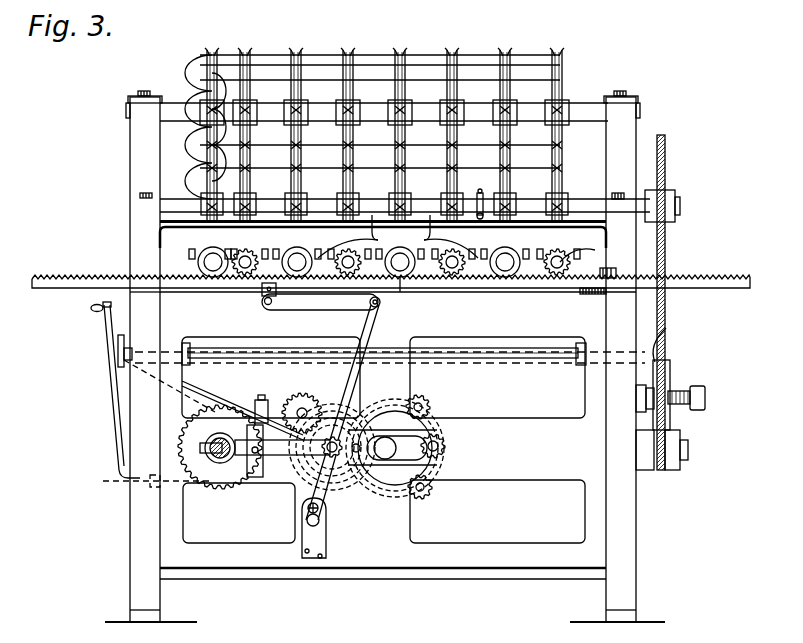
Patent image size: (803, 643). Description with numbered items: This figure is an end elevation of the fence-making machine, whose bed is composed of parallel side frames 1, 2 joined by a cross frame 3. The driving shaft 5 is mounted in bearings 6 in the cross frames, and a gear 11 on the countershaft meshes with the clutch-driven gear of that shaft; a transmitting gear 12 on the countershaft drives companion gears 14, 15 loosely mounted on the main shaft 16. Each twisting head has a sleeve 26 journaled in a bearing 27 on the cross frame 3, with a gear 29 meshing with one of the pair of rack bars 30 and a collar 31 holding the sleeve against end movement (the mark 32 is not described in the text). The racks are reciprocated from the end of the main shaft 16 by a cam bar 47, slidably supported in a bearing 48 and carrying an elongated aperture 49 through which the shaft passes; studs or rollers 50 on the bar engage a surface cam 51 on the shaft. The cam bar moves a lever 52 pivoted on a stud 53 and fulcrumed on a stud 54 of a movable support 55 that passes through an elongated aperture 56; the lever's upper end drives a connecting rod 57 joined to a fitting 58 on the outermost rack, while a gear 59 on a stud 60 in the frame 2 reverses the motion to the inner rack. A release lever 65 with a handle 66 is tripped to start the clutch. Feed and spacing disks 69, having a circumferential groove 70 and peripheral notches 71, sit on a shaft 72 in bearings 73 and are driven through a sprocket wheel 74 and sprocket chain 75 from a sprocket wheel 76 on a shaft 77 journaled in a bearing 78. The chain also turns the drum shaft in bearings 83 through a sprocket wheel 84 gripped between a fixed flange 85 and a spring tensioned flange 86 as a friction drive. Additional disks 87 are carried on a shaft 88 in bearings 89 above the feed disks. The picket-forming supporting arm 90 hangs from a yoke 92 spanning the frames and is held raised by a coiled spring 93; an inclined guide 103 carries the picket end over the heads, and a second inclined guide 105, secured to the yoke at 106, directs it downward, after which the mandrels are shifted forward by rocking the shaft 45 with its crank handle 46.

The side frame 1 is at (140, 236).
The side frame 2 is at (636, 495).
The cross frame 3 is at (383, 435).
The driving shaft 5 is at (205, 447).
The bearings 6 is at (172, 466).
The gear 11 is at (278, 410).
The transmitting gear 12 is at (318, 420).
The companion gear 14 is at (428, 415).
The companion gear 15 is at (420, 400).
The main shaft 16 is at (382, 456).
The sleeve 26 is at (400, 278).
The bearing 27 is at (198, 256).
The gear 29 is at (297, 274).
The rack bars 30 is at (88, 280).
The collars 31 is at (210, 275).
The guide 32 is at (568, 250).
The shaft 45 is at (225, 357).
The crank handle 46 is at (110, 322).
The cam bar 47 is at (283, 470).
The bearing 48 is at (250, 478).
The elongated aperture 49 is at (430, 456).
The studs or rollers 50 is at (358, 444).
The surface cam 51 is at (395, 460).
The lever 52 is at (352, 376).
The stud 53 is at (340, 480).
The stud 54 is at (320, 521).
The movable support 55 is at (326, 548).
The elongated aperture 56 is at (306, 512).
The connecting rod 57 is at (314, 302).
The fitting 58 is at (264, 296).
The gear 59 is at (592, 294).
The stud 60 is at (608, 268).
The lever 65 is at (128, 484).
The handle 66 is at (118, 356).
The feed and spacing disks 69 is at (296, 159).
The circumferential groove 70 is at (345, 159).
The peripheral notches 71 is at (292, 203).
The shaft 72 is at (578, 208).
The bearings 73 is at (140, 197).
The sprocket wheel 74 is at (662, 188).
The sprocket chain 75 is at (666, 228).
The sprocket wheel 76 is at (684, 458).
The shaft 77 is at (680, 445).
The bearing 78 is at (636, 448).
The bearings 83 is at (636, 394).
The sprocket wheel 84 is at (668, 372).
The fixed flange 85 is at (663, 330).
The spring tensioned flange 86 is at (680, 391).
The disks 87 is at (300, 60).
The shaft 88 is at (580, 110).
The bearings 89 is at (150, 91).
The supporting arm 90 is at (455, 276).
The yoke 92 is at (160, 228).
The coiled spring 93 is at (480, 200).
The inclined guide 103 is at (372, 215).
The inclined guide 105 is at (405, 280).
The attachment point 106 is at (430, 215).